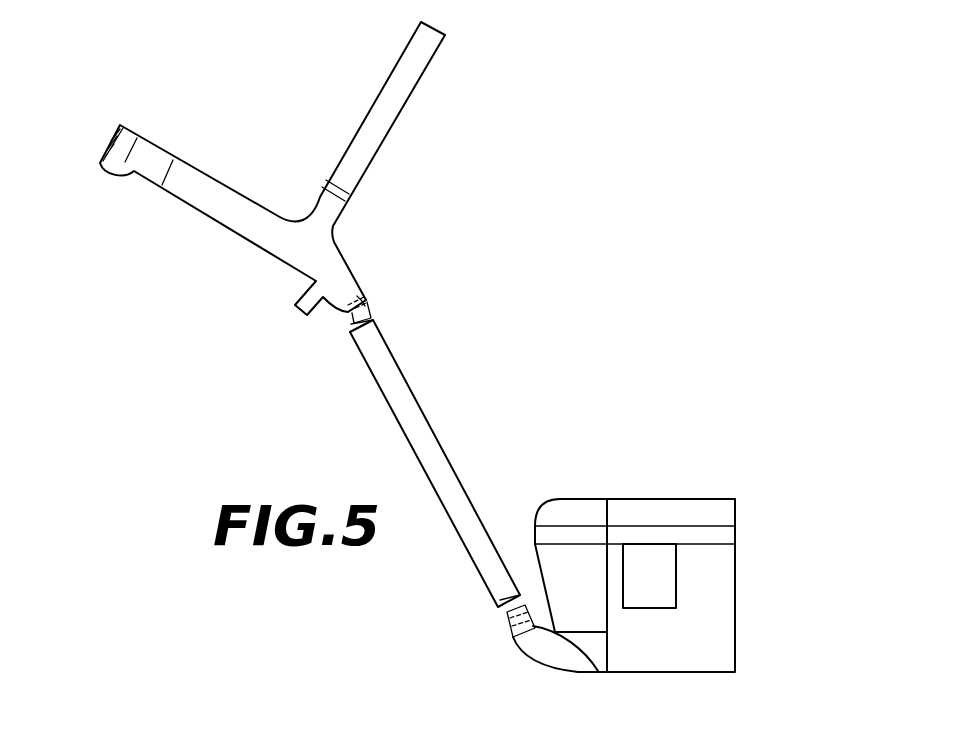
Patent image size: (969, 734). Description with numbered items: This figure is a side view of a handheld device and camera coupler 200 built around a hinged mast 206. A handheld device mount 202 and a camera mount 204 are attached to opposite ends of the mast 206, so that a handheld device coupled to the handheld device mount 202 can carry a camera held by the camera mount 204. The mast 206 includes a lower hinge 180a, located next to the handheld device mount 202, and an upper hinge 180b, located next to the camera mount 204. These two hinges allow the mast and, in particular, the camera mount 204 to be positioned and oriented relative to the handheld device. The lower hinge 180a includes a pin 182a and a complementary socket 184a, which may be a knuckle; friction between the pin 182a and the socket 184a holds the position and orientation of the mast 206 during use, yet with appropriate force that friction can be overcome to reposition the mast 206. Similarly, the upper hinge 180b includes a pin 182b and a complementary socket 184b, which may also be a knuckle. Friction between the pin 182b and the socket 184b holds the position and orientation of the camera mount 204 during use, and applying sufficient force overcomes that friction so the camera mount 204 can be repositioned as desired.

The handheld device and camera coupler 200 is at (657, 120).
The handheld device mount 202 is at (715, 482).
The camera mount 204 is at (180, 236).
The mast 206 is at (417, 415).
The lower hinge 180a is at (487, 639).
The upper hinge 180b is at (350, 324).
The pin 182a is at (505, 618).
The pin 182b is at (367, 305).
The socket 184a is at (510, 638).
The socket 184b is at (356, 300).